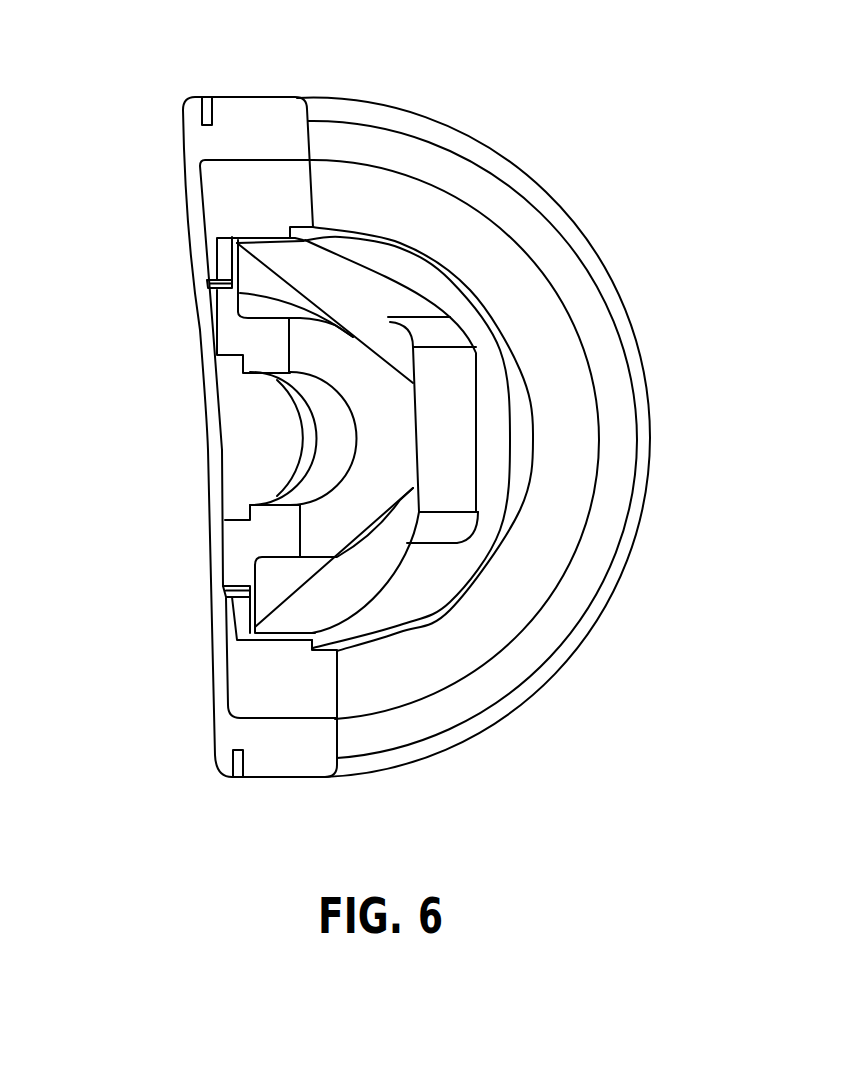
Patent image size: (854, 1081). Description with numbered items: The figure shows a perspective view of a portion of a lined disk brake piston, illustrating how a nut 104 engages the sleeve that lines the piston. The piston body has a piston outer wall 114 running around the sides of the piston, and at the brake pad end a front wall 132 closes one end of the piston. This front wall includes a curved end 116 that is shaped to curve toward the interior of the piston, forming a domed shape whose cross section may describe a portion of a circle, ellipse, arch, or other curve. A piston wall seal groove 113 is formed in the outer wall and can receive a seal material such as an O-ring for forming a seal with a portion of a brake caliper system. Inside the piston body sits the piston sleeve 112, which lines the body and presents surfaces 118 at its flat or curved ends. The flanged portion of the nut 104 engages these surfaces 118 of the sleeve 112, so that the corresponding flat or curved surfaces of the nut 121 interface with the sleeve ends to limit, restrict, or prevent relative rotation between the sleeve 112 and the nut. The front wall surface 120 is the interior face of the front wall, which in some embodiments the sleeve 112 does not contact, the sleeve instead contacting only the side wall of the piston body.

The nut 104 is at (337, 345).
The piston sleeve 112 is at (450, 655).
The piston wall seal groove 113 is at (203, 97).
The piston outer wall 114 is at (318, 770).
The curved end 116 is at (221, 467).
The surfaces of the sleeve 118 is at (460, 393).
The front wall surface 120 is at (200, 233).
The nut 121 is at (312, 641).
The front wall 132 is at (195, 300).